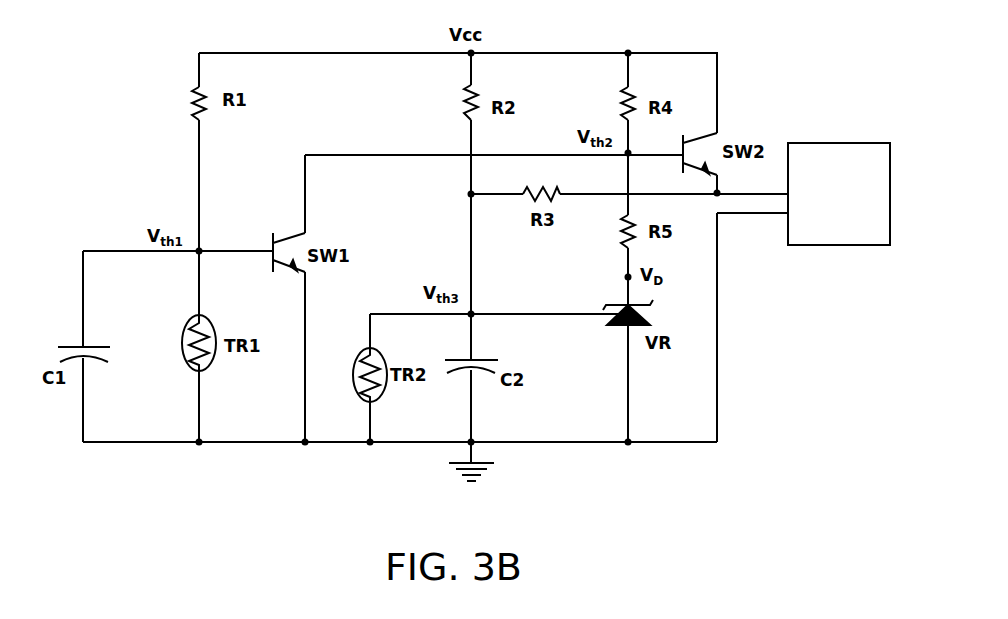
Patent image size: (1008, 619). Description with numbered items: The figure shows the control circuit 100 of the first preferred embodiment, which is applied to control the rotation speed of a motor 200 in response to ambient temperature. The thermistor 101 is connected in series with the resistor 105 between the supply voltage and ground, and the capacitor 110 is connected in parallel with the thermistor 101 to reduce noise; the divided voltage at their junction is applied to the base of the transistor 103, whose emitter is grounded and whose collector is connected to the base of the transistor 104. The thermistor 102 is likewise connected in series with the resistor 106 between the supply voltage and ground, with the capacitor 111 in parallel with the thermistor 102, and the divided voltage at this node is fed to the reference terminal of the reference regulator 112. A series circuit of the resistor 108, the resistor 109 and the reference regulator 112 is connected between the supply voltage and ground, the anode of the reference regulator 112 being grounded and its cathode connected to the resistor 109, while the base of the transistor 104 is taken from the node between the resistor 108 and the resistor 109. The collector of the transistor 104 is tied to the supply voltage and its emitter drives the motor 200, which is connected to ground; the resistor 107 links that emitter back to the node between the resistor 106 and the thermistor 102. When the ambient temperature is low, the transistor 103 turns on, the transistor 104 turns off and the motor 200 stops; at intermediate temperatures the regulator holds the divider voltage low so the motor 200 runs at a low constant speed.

The control circuit 100 is at (792, 33).
The thermistor TR1 101 is at (187, 331).
The thermistor TR2 102 is at (357, 376).
The transistor SW1 103 is at (292, 236).
The transistor SW2 104 is at (700, 138).
The resistor R1 105 is at (191, 97).
The resistor R2 106 is at (464, 101).
The resistor R3 107 is at (538, 186).
The resistor R4 108 is at (621, 100).
The resistor R5 109 is at (622, 227).
The capacitor C1 110 is at (96, 360).
The capacitor C2 111 is at (486, 356).
The reference regulator VR 112 is at (641, 316).
The motor 200 is at (810, 143).